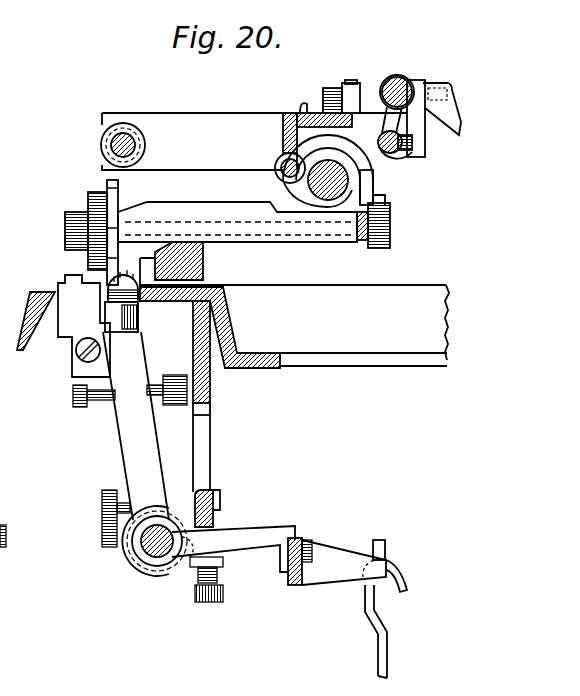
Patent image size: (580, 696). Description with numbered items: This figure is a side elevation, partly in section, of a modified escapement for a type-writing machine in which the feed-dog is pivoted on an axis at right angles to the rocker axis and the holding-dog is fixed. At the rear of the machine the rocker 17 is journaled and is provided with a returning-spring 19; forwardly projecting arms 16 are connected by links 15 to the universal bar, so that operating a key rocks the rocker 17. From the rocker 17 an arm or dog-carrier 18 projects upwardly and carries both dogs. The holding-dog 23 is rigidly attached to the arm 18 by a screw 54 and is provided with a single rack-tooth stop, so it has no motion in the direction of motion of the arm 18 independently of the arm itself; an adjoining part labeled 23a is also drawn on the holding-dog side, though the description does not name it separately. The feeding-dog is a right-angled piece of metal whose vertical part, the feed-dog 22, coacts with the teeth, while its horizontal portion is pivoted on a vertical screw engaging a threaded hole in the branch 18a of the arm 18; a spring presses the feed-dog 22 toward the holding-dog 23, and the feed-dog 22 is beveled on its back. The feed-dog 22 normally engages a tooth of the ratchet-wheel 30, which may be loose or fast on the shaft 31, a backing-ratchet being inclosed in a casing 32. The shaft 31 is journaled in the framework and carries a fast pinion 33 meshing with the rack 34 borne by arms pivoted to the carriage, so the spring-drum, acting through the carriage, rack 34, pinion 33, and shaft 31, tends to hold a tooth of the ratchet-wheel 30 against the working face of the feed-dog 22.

The links 15 is at (377, 645).
The arms 16 is at (263, 531).
The rocker 17 is at (130, 558).
The arm or dog-carrier 18 is at (144, 439).
The branch of the arm 18a is at (139, 325).
The returning-spring 19 is at (157, 575).
The feed-dog 22 is at (100, 282).
The holding-dog 23 is at (80, 315).
The wedge 23a is at (83, 283).
The ratchet-wheel 30 is at (119, 193).
The shaft 31 is at (287, 236).
The casing 32 is at (88, 197).
The pinion 33 is at (391, 224).
The rack 34 is at (386, 188).
The screw 54 is at (84, 357).